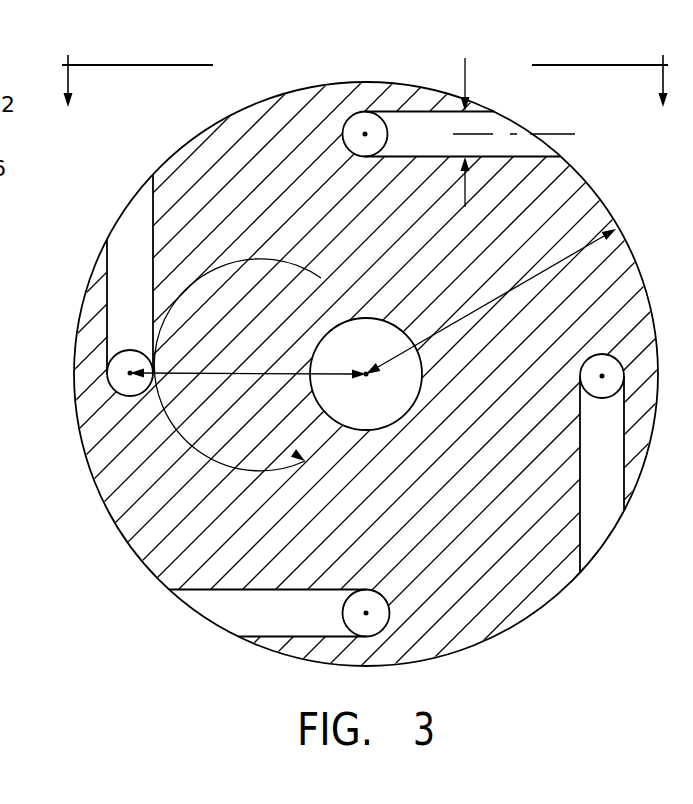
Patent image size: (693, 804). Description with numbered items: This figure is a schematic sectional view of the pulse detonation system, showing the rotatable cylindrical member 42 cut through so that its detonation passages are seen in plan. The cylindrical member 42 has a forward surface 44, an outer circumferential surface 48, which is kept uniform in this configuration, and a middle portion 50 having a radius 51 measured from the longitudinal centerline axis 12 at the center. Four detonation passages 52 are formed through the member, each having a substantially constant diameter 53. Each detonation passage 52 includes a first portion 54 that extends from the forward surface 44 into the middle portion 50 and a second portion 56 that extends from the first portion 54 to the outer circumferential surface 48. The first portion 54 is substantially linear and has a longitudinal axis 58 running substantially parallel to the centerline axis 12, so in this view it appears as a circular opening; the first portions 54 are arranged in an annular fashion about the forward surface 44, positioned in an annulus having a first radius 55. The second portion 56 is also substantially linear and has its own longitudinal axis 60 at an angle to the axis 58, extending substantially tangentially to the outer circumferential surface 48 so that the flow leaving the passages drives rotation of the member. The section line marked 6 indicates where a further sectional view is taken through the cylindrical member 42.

The section line 6- 6 is at (365, 66).
The longitudinal centerline axis 12 is at (367, 376).
The rotatable cylindrical member 42 is at (590, 169).
The forward surface 44 is at (462, 491).
The outer circumferential surface 48 is at (212, 124).
The middle portion 50 is at (458, 633).
The radius 51 is at (540, 276).
The detonation passage 52 is at (408, 97).
The diameter 53 is at (467, 72).
The first portion 54 is at (364, 133).
The first radius 55 is at (248, 378).
The second portion 56 is at (447, 111).
The longitudinal axis 58 is at (365, 132).
The longitudinal axis 60 is at (551, 134).